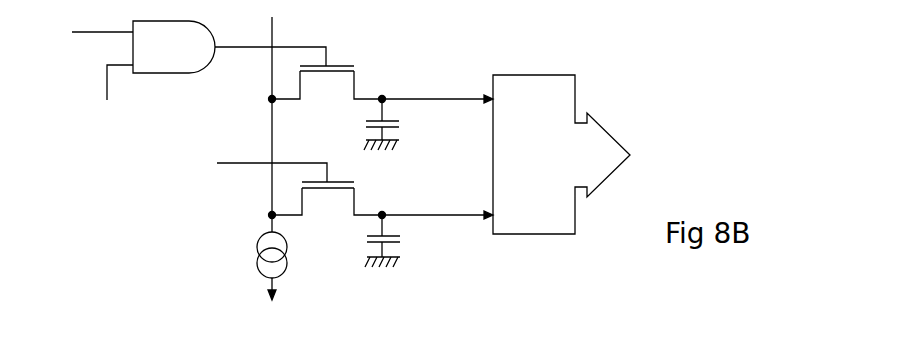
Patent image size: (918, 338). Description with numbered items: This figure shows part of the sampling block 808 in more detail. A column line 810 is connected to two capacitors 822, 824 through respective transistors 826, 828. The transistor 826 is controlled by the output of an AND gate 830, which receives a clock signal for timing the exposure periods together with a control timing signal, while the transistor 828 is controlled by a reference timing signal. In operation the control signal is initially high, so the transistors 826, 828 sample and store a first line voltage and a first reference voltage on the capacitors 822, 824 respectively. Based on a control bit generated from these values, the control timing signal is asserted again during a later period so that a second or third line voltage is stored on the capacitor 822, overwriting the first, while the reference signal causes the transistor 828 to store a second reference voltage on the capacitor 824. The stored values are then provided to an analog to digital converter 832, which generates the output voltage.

The sampling block 808 is at (418, 44).
The column line 810 is at (272, 32).
The capacitor 822 is at (399, 121).
The capacitor 824 is at (400, 238).
The transistor 826 is at (330, 80).
The transistor 828 is at (328, 193).
The AND gate 830 is at (197, 39).
The analog to digital converter 832 is at (532, 75).